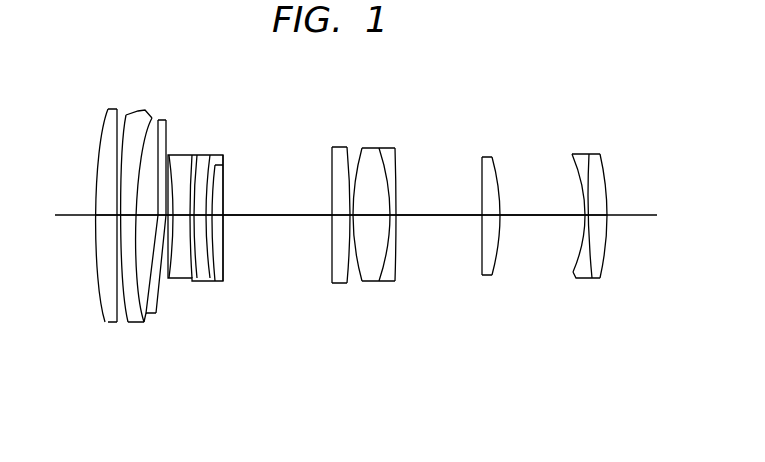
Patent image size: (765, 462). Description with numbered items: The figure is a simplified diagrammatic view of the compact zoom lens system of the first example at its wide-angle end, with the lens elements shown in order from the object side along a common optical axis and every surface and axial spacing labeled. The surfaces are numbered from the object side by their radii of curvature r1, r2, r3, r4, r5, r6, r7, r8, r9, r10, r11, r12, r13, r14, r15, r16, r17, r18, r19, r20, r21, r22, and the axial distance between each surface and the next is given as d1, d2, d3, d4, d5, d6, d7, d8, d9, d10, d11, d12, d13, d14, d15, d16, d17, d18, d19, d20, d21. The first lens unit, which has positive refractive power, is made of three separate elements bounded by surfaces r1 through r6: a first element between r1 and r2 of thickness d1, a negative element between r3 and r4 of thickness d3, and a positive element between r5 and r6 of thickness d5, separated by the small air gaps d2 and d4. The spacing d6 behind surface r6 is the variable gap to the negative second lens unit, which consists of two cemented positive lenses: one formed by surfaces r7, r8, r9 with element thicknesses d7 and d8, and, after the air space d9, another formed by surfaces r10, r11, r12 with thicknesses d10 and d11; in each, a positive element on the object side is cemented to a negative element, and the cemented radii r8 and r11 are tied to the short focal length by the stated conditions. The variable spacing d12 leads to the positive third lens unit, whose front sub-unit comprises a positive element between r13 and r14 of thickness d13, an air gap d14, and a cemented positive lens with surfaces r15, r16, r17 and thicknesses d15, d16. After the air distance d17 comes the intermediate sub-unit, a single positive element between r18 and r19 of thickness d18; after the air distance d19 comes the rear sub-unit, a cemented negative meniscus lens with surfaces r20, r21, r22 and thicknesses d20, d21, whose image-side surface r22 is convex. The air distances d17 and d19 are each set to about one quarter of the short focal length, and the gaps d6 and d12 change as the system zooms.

The first surface radius of curvature r1 is at (104, 109).
The second surface radius of curvature r2 is at (117, 109).
The third surface radius of curvature r3 is at (134, 112).
The fourth surface radius of curvature r4 is at (151, 116).
The fifth surface radius of curvature r5 is at (159, 119).
The sixth surface radius of curvature r6 is at (166, 119).
The seventh surface radius of curvature r7 is at (170, 154).
The eighth surface radius of curvature r8 is at (191, 154).
The ninth surface radius of curvature r9 is at (198, 154).
The tenth surface radius of curvature r10 is at (210, 154).
The eleventh surface radius of curvature r11 is at (216, 165).
The twelfth surface radius of curvature r12 is at (223, 165).
The thirteenth surface radius of curvature r13 is at (333, 146).
The fourteenth surface radius of curvature r14 is at (346, 146).
The fifteenth surface radius of curvature r15 is at (362, 147).
The sixteenth surface radius of curvature r16 is at (380, 147).
The seventeenth surface radius of curvature r17 is at (395, 147).
The eighteenth surface radius of curvature r18 is at (483, 156).
The nineteenth surface radius of curvature r19 is at (493, 156).
The twentieth surface radius of curvature r20 is at (572, 153).
The twenty-first surface radius of curvature r21 is at (589, 153).
The twenty-second surface radius of curvature r22 is at (601, 153).
The first axial distance d1 is at (108, 217).
The second axial distance d2 is at (118, 217).
The third axial distance d3 is at (130, 217).
The fourth axial distance d4 is at (153, 217).
The fifth axial distance d5 is at (164, 217).
The sixth axial distance d6 is at (170, 217).
The seventh axial distance d7 is at (182, 217).
The eighth axial distance d8 is at (198, 217).
The ninth axial distance d9 is at (207, 217).
The tenth axial distance d10 is at (212, 217).
The eleventh axial distance d11 is at (222, 217).
The twelfth axial distance d12 is at (272, 217).
The thirteenth axial distance d13 is at (336, 217).
The fourteenth axial distance d14 is at (352, 217).
The fifteenth axial distance d15 is at (367, 217).
The sixteenth axial distance d16 is at (396, 217).
The seventeenth axial distance d17 is at (430, 217).
The eighteenth axial distance d18 is at (495, 217).
The nineteenth axial distance d19 is at (535, 217).
The twentieth axial distance d20 is at (586, 217).
The twenty-first axial distance d21 is at (602, 217).